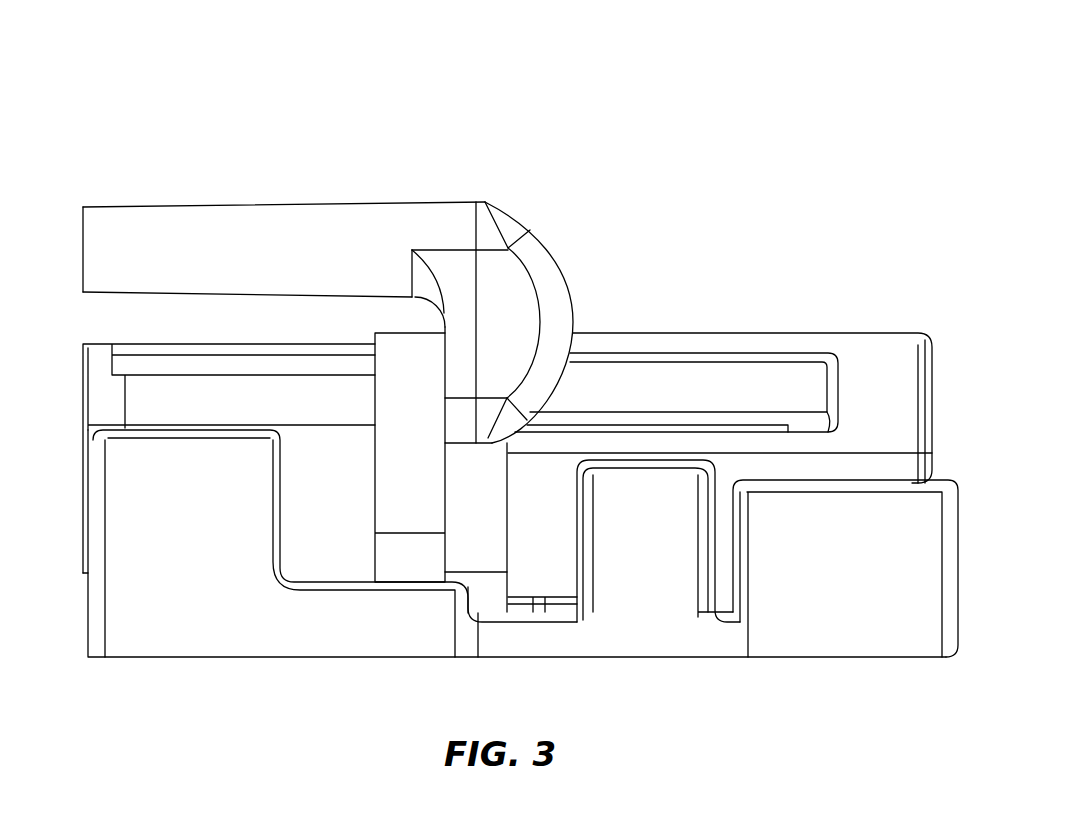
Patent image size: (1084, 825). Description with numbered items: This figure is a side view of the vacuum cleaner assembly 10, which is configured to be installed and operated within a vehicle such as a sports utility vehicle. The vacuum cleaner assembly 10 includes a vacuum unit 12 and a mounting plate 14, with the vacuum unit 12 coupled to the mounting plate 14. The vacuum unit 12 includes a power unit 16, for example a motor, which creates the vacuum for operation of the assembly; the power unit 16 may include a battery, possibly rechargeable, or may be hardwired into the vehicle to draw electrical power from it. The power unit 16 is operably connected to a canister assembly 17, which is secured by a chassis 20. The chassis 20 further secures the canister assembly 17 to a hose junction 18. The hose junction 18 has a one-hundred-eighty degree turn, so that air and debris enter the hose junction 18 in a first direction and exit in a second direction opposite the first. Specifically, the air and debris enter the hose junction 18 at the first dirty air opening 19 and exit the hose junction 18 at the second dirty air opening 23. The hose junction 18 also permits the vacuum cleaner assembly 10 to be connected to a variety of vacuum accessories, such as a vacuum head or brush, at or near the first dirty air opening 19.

The vacuum cleaner assembly 10 is at (298, 133).
The vacuum unit 12 is at (872, 378).
The mounting plate 14 is at (203, 610).
The power unit 16 is at (737, 342).
The canister assembly 17 is at (327, 482).
The hose junction 18 is at (321, 243).
The first dirty air opening 19 is at (82, 243).
The chassis 20 is at (420, 485).
The second dirty air opening 23 is at (447, 382).